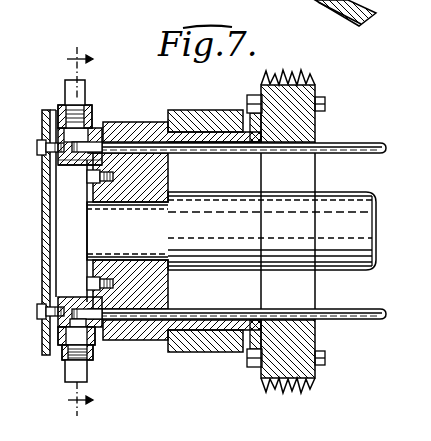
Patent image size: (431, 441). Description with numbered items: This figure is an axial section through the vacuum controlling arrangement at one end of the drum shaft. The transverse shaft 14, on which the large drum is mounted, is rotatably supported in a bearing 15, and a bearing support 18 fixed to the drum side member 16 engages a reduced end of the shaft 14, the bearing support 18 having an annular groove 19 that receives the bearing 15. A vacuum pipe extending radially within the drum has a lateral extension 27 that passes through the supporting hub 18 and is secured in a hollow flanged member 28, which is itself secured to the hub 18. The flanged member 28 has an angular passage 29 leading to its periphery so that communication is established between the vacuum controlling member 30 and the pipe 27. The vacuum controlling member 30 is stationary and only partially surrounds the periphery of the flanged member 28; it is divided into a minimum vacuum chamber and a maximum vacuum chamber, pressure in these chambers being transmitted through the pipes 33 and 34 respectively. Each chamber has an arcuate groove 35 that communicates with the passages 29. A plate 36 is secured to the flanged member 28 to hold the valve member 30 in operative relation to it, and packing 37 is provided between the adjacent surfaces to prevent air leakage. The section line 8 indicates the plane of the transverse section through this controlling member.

The section line 8- 8 is at (72, 231).
The transverse shaft 14 is at (232, 201).
The bearing 15 is at (213, 110).
The side member 16 is at (303, 130).
The bearing support 18 is at (137, 127).
The annular groove 19 is at (211, 136).
The lateral extension 27 is at (358, 146).
The hollow flanged member 28 is at (66, 166).
The angular passage 29 is at (44, 136).
The vacuum controlling member 30 is at (60, 107).
The pipe 33 is at (85, 374).
The pipe 34 is at (83, 92).
The arcuate groove 35 is at (90, 118).
The plate 36 is at (44, 348).
The packing 37 is at (56, 319).